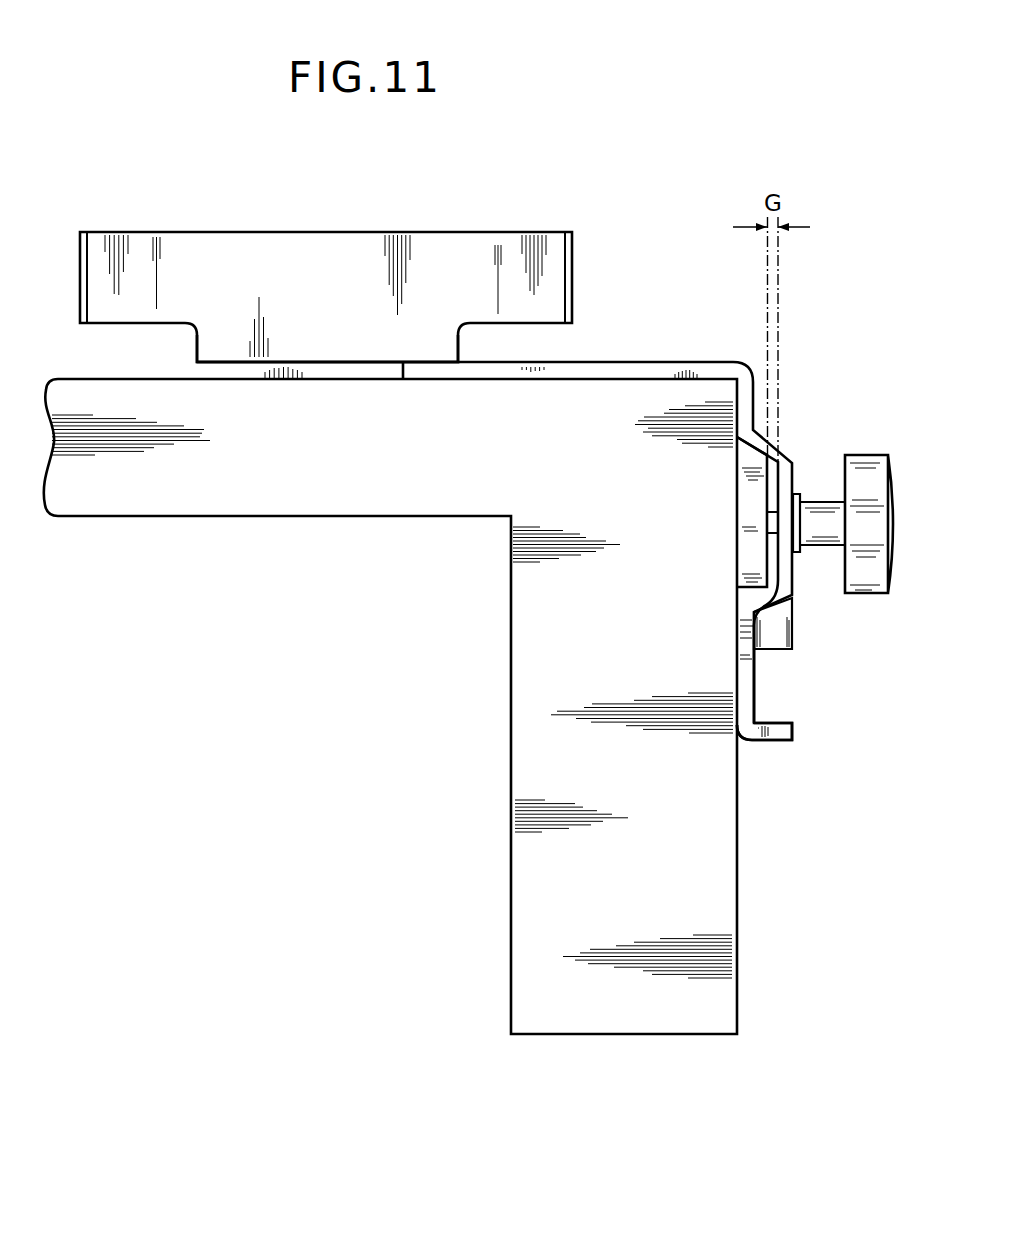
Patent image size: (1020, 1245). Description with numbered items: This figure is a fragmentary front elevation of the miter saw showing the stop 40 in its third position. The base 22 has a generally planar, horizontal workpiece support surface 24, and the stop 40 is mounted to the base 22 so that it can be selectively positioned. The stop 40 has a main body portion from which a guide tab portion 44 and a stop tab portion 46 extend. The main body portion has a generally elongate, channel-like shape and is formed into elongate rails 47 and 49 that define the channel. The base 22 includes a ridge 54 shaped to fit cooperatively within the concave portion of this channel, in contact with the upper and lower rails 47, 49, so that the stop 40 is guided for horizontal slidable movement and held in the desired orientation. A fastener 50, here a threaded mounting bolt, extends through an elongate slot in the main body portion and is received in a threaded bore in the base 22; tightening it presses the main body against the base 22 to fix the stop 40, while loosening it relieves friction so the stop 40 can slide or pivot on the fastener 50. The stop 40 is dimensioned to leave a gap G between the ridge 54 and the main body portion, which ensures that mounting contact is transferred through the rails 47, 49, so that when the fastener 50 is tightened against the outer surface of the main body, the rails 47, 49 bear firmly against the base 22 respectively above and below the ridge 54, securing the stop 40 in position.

The base 22 is at (553, 640).
The workpiece support surface 24 is at (664, 362).
The stop 40 is at (537, 234).
The guide tab portion 44 is at (303, 262).
The stop tab portion 46 is at (772, 741).
The rail 47 is at (742, 415).
The rail 49 is at (741, 636).
The fastener 50 is at (868, 455).
The ridge 54 is at (762, 557).